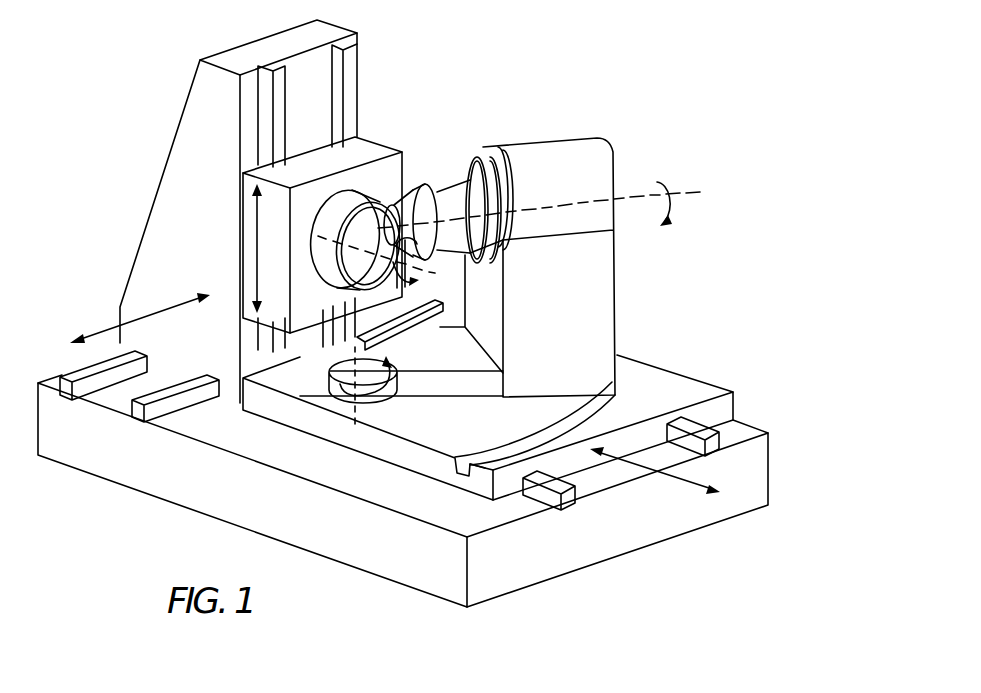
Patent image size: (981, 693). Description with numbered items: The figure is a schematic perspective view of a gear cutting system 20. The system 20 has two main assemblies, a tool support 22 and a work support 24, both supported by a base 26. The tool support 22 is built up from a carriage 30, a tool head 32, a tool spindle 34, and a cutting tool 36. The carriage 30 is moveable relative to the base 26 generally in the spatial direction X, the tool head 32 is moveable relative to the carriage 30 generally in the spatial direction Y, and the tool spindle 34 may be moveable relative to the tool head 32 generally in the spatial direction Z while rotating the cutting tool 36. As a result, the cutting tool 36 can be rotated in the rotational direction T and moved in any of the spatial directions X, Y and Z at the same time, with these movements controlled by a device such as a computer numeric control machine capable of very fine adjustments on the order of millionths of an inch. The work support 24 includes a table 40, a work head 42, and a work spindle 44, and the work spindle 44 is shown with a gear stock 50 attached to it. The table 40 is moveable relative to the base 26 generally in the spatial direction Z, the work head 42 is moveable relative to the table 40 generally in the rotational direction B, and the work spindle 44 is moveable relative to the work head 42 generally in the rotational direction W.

The gear cutting system 20 is at (543, 70).
The tool support 22 is at (150, 172).
The work support 24 is at (612, 142).
The base 26 is at (753, 482).
The carriage 30 is at (203, 110).
The tool head 32 is at (370, 147).
The tool spindle 34 is at (327, 267).
The cutting tool 36 is at (407, 197).
The table 40 is at (667, 387).
The work head 42 is at (560, 147).
The work spindle 44 is at (466, 175).
The gear stock 50 is at (358, 222).